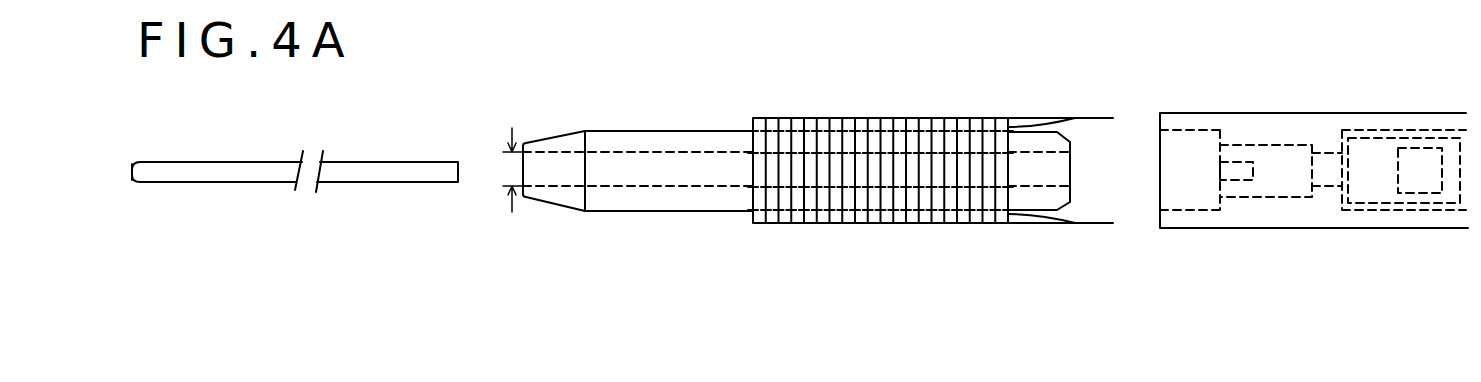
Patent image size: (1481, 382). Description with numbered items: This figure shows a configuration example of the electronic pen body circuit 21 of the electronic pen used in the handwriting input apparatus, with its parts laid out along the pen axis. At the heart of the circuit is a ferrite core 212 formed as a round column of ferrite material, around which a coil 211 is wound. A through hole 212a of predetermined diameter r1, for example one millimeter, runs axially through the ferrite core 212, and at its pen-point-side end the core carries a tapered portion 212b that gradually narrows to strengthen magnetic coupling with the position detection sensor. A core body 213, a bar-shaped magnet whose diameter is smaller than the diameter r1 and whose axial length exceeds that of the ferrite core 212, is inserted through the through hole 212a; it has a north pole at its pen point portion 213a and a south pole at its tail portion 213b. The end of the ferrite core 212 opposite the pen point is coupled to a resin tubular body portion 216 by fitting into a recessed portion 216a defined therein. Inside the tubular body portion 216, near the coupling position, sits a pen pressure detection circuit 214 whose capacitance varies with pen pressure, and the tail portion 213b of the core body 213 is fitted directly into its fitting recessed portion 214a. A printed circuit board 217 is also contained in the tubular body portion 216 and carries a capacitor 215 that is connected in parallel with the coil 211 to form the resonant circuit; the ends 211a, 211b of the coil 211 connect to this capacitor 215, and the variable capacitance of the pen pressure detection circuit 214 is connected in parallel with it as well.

The electronic pen body circuit 21 is at (855, 72).
The coil 211 is at (868, 224).
The end of coil 211a is at (1100, 117).
The end of coil 211b is at (1102, 224).
The ferrite core 212 is at (665, 131).
The through hole 212a is at (670, 172).
The tapered portion 212b is at (557, 204).
The core body 213 is at (267, 162).
The pen point portion 213a is at (140, 179).
The tail portion 213b is at (448, 174).
The pen pressure detection circuit 214 is at (1278, 158).
The fitting recessed portion 214a is at (1237, 170).
The capacitor 215 is at (1420, 180).
The tubular body portion 216 is at (1330, 130).
The recessed portion 216a is at (1188, 150).
The printed circuit board 217 is at (1367, 183).
The diameter of through hole r1 is at (508, 170).